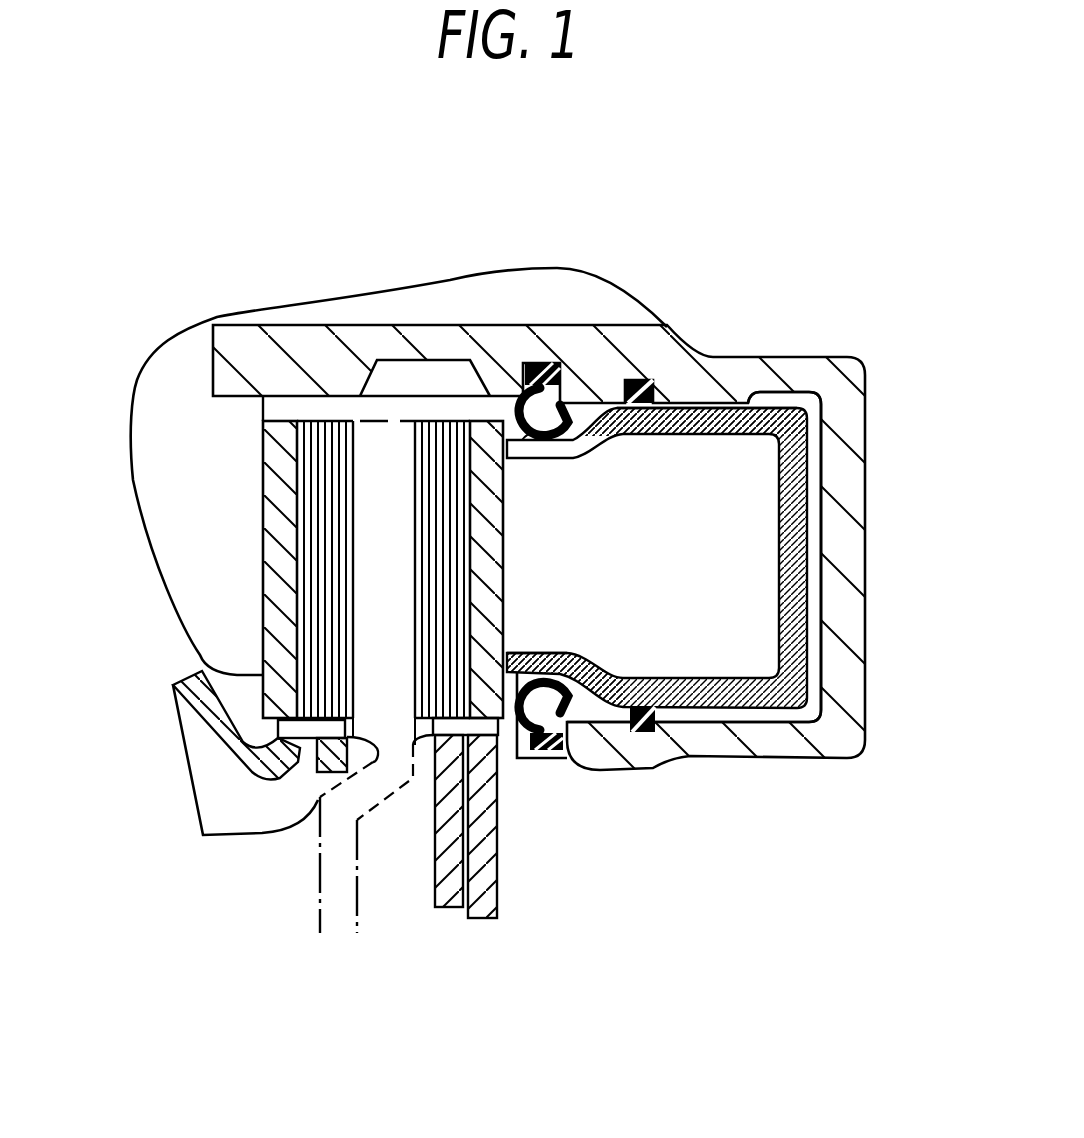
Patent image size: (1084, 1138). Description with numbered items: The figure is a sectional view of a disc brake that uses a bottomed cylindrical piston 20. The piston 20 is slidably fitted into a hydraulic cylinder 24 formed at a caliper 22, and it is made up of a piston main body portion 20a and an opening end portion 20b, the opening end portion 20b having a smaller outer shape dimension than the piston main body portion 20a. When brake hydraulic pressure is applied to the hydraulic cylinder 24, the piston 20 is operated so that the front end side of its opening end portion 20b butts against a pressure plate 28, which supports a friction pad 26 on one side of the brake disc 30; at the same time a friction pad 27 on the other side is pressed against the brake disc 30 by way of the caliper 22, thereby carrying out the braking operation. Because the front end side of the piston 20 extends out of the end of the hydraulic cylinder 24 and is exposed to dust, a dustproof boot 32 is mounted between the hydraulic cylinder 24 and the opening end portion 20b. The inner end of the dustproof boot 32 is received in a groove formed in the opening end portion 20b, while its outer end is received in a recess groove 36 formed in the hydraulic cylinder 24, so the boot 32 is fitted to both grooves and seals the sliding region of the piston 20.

The bottomed cylindrical piston 20 is at (814, 450).
The piston main body portion 20a is at (722, 412).
The opening end portion 20b is at (510, 655).
The caliper 22 is at (543, 283).
The hydraulic cylinder 24 is at (809, 622).
The friction pad 26 is at (432, 452).
The friction pad 27 is at (320, 464).
The pressure plate 28 is at (500, 566).
The brake disc 30 is at (384, 455).
The dustproof boot 32 is at (520, 724).
The recess groove 36 is at (564, 760).